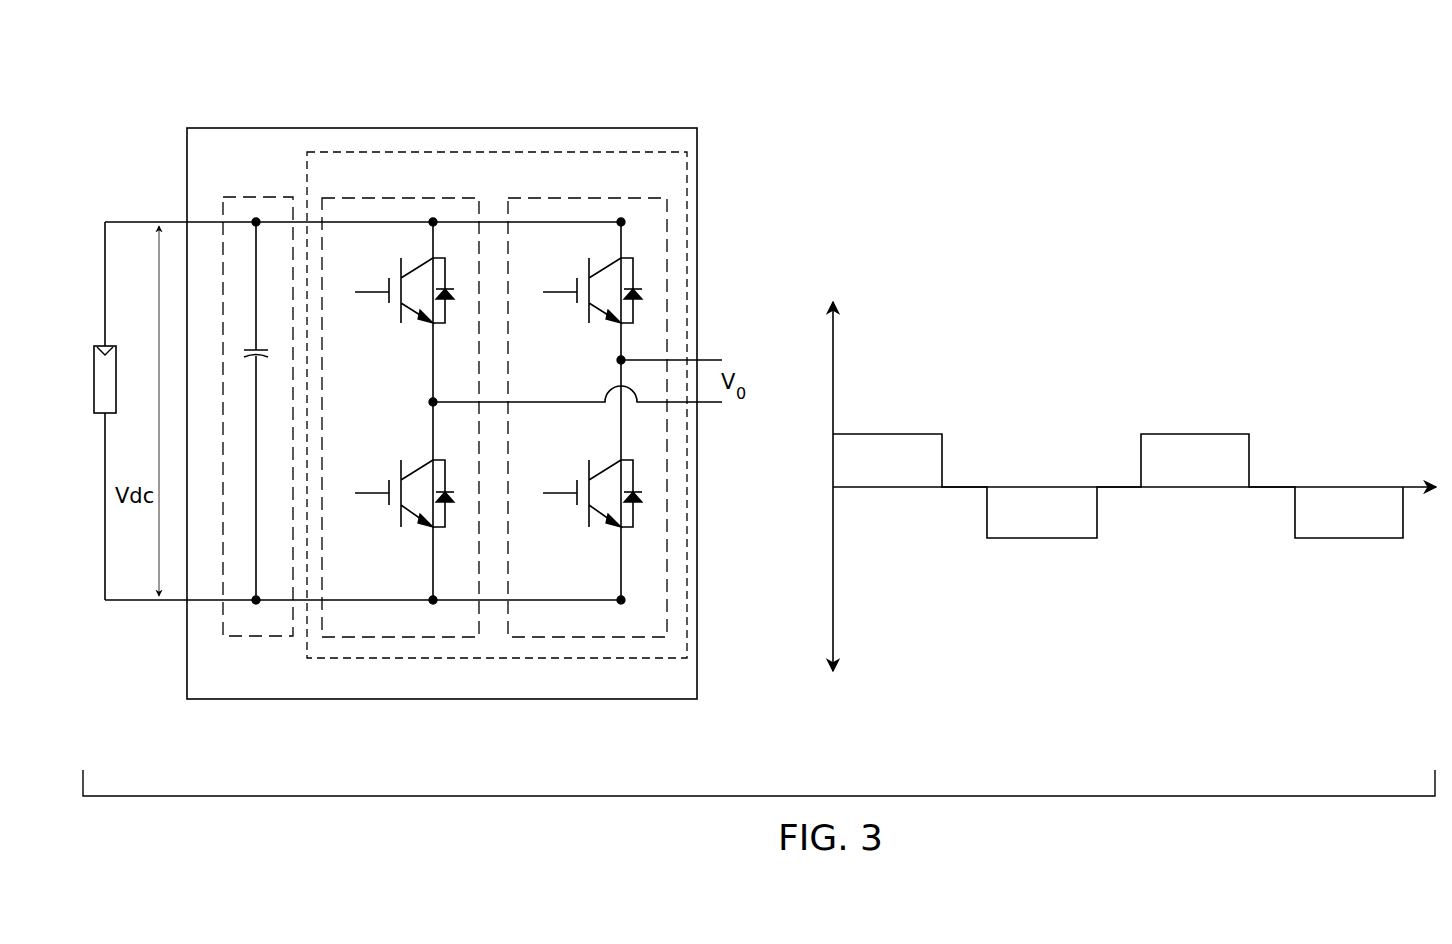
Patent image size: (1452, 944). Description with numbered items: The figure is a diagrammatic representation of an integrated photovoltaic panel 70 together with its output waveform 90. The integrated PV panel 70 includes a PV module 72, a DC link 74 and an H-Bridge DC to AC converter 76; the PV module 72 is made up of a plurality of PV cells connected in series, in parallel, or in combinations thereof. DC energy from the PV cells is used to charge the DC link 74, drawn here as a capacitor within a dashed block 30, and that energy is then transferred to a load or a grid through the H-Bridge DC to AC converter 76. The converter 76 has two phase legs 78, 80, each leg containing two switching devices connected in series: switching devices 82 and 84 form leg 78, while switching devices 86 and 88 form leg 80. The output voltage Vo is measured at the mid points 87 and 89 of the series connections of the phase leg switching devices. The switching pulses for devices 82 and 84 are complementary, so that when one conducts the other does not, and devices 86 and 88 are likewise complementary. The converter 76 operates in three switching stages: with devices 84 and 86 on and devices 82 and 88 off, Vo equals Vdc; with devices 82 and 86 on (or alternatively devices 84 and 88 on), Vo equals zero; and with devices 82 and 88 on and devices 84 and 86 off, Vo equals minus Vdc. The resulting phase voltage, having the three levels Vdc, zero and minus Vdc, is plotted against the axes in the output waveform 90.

The integrated photovoltaic panel 70 is at (656, 89).
The DC link 30 is at (286, 197).
The PV module 72 is at (105, 346).
The DC link 74 is at (255, 347).
The H-Bridge DC to AC converter 76 is at (543, 658).
The phase leg 78 is at (400, 197).
The phase leg 80 is at (588, 197).
The switching device 82 is at (400, 267).
The switching device 84 is at (400, 470).
The switching device 86 is at (588, 267).
The mid point 87 is at (619, 360).
The switching device 88 is at (588, 470).
The mid point 89 is at (432, 400).
The output waveform 90 is at (1295, 679).